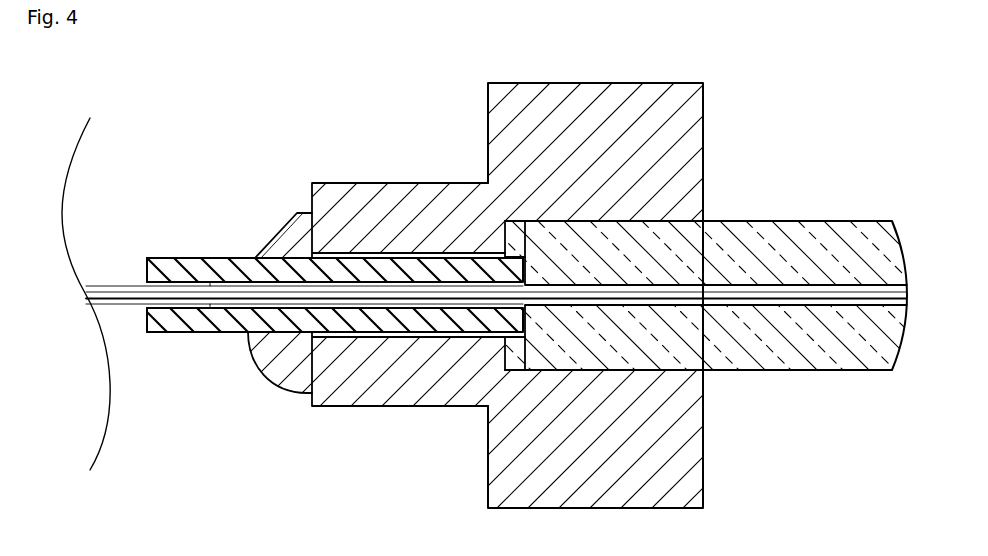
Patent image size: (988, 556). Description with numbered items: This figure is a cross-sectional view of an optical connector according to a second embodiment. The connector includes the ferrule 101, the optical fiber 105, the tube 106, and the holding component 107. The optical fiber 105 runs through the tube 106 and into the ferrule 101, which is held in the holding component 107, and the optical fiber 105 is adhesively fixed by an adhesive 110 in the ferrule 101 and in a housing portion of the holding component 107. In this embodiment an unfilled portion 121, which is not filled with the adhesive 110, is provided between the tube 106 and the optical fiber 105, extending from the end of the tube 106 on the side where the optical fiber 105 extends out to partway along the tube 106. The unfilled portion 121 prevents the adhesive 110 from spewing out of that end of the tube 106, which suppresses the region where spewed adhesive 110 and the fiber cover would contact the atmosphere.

The ferrule 101 is at (793, 220).
The optical fiber 105 is at (120, 270).
The tube 106 is at (210, 259).
The holding component 107 is at (704, 123).
The adhesive 110 is at (505, 221).
The unfilled portion 121 is at (210, 345).